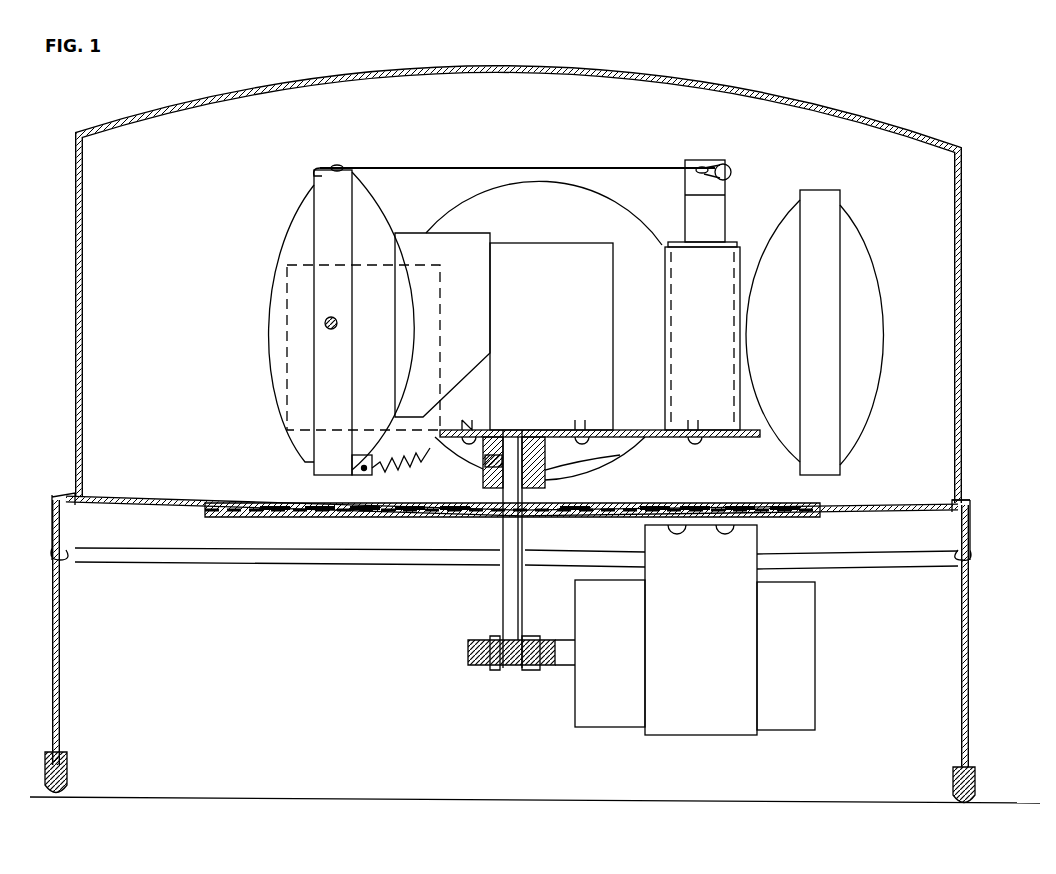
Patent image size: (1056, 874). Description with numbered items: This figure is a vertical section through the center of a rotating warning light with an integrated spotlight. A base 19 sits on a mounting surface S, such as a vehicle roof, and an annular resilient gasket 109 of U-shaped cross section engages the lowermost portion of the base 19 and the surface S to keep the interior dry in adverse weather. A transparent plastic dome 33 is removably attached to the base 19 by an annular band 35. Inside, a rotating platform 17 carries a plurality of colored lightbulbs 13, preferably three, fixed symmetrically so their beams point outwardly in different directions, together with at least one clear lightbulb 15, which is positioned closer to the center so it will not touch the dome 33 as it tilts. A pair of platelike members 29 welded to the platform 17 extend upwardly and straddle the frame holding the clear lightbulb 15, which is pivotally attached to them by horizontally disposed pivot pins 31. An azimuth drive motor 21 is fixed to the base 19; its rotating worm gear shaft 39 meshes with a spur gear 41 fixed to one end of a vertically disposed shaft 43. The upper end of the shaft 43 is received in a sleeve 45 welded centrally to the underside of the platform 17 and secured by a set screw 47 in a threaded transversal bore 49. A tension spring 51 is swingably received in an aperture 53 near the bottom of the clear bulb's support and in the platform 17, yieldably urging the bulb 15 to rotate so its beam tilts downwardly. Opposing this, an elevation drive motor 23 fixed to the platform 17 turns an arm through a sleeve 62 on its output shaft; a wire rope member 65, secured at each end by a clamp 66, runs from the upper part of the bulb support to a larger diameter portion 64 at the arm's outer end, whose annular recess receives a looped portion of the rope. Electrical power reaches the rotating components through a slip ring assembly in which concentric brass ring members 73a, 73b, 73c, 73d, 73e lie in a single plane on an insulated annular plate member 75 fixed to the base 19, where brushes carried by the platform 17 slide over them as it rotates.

The colored lightbulbs 13 is at (540, 212).
The clear lightbulb 15 is at (298, 217).
The rotating platform 17 is at (548, 430).
The base 19 is at (165, 503).
The azimuth drive motor 21 is at (795, 668).
The elevation drive motor 23 is at (718, 215).
The platelike members 29 is at (428, 270).
The pivot pins 31 is at (325, 326).
The transparent dome 33 is at (963, 250).
The annular band 35 is at (975, 525).
The worm gear shaft 39 is at (560, 675).
The spur gear 41 is at (468, 656).
The shaft 43 is at (503, 598).
The sleeve 45 is at (548, 460).
The set screw 47 is at (485, 462).
The threaded transversal bore 49 is at (496, 435).
The tension spring 51 is at (430, 462).
The aperture 53 is at (360, 470).
The sleeve 62 is at (688, 185).
The larger diameter portion 64 is at (727, 166).
The wire rope member 65 is at (440, 166).
The clamp 66 is at (338, 164).
The ring member 73a is at (455, 512).
The ring member 73b is at (410, 512).
The ring member 73c is at (366, 512).
The ring member 73d is at (322, 512).
The ring member 73e is at (276, 512).
The insulated annular plate member 75 is at (250, 503).
The annular resilient gasket 109 is at (67, 780).
The surface S is at (680, 800).